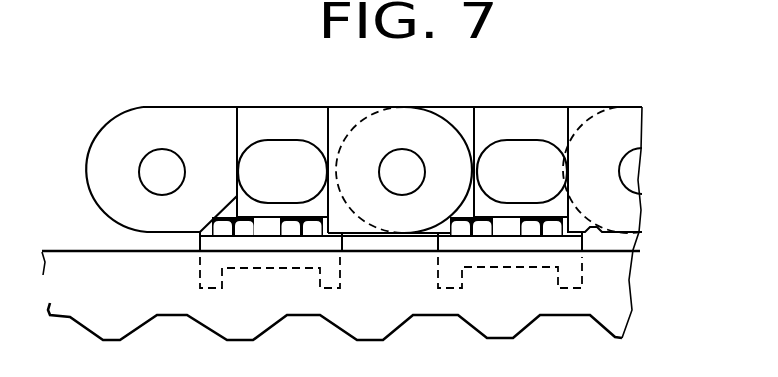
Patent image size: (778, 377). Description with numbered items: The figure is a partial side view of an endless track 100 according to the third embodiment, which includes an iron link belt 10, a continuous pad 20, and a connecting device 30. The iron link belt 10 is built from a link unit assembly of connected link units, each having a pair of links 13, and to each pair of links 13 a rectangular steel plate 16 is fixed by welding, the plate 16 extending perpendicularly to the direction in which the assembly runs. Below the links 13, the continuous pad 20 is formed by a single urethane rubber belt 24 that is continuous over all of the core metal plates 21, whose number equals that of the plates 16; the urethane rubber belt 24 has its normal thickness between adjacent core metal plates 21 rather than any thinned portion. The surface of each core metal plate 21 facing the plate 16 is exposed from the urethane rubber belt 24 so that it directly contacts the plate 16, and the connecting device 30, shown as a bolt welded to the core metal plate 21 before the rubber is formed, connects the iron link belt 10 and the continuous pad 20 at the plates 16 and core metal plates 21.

The endless track 100 is at (580, 106).
The iron link belt 10 is at (512, 118).
The links 13 is at (133, 146).
The plate 16 is at (317, 243).
The continuous pad 20 is at (606, 303).
The core metal plate 21 is at (203, 262).
The urethane rubber belt 24 is at (608, 272).
The connecting device 30 is at (222, 228).